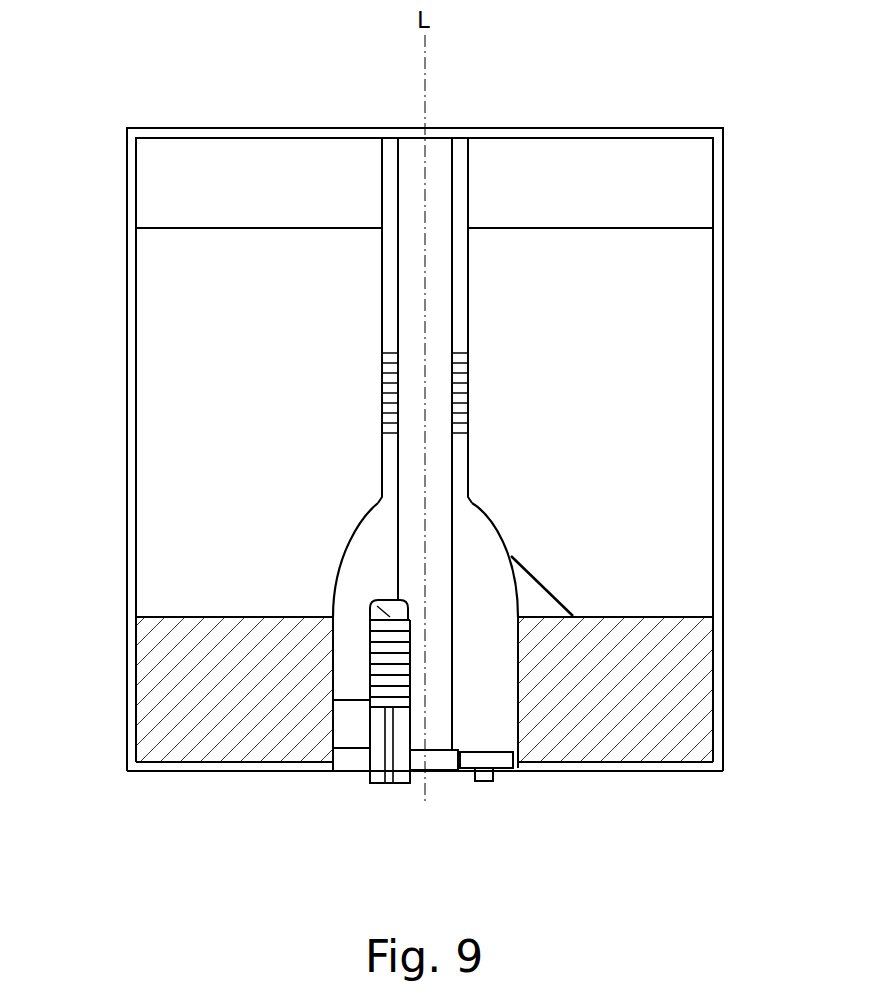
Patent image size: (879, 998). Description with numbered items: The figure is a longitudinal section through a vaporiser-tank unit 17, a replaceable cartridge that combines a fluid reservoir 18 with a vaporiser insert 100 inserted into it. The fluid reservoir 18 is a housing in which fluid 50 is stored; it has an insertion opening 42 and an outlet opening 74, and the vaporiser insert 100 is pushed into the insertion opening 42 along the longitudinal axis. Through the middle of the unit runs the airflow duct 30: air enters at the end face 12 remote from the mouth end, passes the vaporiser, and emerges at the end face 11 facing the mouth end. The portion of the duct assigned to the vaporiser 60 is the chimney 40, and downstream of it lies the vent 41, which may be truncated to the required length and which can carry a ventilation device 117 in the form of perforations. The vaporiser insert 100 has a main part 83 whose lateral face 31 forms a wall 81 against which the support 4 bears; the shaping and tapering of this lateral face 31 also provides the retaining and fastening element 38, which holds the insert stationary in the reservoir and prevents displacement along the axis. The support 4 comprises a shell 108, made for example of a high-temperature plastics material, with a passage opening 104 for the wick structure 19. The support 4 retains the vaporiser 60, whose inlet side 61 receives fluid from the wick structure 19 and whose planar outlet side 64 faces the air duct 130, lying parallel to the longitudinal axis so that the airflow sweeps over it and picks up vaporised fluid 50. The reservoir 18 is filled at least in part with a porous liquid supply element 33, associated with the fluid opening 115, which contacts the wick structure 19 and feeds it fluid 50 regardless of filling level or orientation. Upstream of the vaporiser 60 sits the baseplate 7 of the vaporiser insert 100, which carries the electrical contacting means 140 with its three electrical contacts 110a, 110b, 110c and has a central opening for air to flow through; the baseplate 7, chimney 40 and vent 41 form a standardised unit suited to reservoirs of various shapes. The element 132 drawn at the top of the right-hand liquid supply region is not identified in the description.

The vaporiser-tank unit 17 is at (190, 82).
The fluid reservoir 18 is at (723, 205).
The end face 11 is at (398, 127).
The airflow duct 30 is at (438, 185).
The outlet opening 74 is at (432, 160).
The fluid 50 is at (282, 325).
The vent 41 is at (436, 272).
The ventilation device 117 is at (395, 363).
The retaining and/or fastening element 38 is at (380, 500).
The outlet side 64 is at (418, 618).
The vaporiser 60 is at (370, 603).
The support 4 is at (370, 616).
The inlet side 61 is at (373, 627).
The wick structure 19 is at (380, 660).
The passage opening 104 is at (377, 700).
The fluid opening 115 is at (368, 690).
The wall 81 is at (447, 515).
The main part 83 is at (470, 540).
The lateral face 31 is at (512, 553).
The filler top surface 132 is at (547, 612).
The liquid supply element 33 is at (680, 640).
The chimney 40 is at (437, 633).
The air duct 130 is at (428, 658).
The shell 108 is at (468, 692).
The electrical contacting means 140 is at (342, 771).
The insertion opening 42 is at (302, 771).
The electrical contact 110a is at (377, 785).
The electrical contact 110b is at (402, 785).
The baseplate 7 is at (422, 773).
The end face 12 is at (453, 777).
The vaporiser insert 100 is at (437, 792).
The electrical contact 110c is at (485, 783).